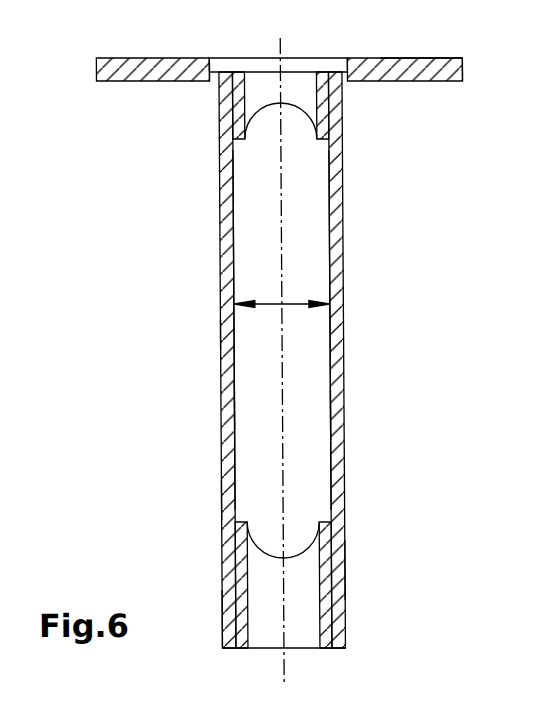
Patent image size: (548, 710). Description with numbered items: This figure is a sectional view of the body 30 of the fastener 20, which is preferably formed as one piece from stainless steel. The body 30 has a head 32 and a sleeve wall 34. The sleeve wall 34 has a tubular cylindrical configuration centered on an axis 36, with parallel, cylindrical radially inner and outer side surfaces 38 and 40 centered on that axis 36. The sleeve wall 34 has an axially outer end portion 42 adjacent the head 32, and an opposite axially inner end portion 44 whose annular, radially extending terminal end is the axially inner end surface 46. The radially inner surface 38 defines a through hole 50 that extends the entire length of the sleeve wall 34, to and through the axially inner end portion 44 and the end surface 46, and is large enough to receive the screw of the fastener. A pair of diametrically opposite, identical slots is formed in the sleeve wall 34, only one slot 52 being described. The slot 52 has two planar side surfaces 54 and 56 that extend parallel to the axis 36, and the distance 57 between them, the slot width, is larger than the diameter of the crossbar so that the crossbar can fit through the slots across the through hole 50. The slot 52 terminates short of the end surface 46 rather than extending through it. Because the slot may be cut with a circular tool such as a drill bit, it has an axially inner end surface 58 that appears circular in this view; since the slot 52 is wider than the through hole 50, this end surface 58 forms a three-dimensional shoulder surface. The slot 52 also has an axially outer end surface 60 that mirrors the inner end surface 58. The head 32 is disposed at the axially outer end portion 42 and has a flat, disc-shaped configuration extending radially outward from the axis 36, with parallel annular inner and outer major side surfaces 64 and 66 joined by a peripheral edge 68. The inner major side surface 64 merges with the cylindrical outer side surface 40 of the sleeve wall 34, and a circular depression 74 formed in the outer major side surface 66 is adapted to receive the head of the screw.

The fastener 20 is at (127, 496).
The body 30 is at (116, 333).
The head 32 is at (92, 100).
The sleeve wall 34 is at (185, 235).
The axis 36 is at (281, 662).
The radially inner side surface 38 is at (320, 593).
The radially outer side surface 40 is at (342, 565).
The axially outer end portion 42 is at (330, 98).
The axially inner end portion 44 is at (229, 604).
The axially inner end surface 46 is at (233, 648).
The through hole 50 is at (256, 90).
The slot 52 is at (314, 379).
The side surface 54 is at (333, 407).
The side surface 56 is at (231, 400).
The distance 57 is at (291, 306).
The axially inner end surface 58 is at (336, 526).
The axially outer end surface 60 is at (231, 140).
The inner major side surface 64 is at (452, 81).
The outer major side surface 66 is at (441, 57).
The peripheral edge 68 is at (462, 66).
The depression 74 is at (237, 71).